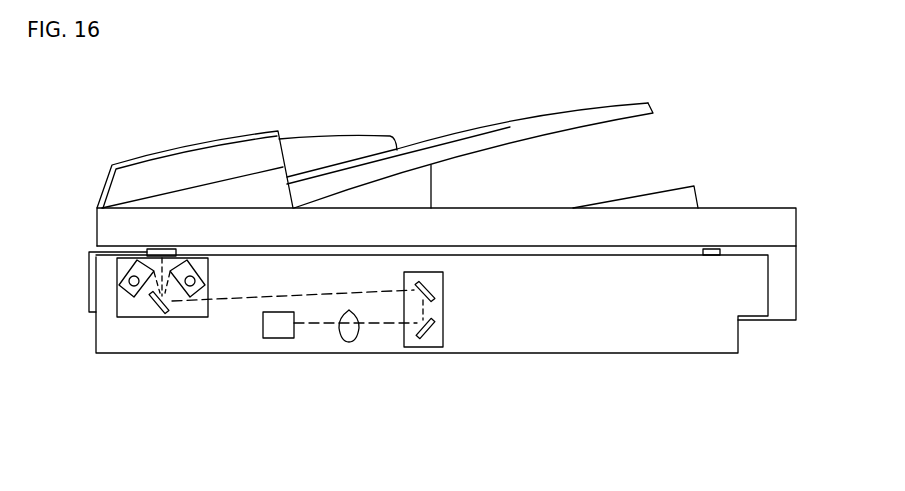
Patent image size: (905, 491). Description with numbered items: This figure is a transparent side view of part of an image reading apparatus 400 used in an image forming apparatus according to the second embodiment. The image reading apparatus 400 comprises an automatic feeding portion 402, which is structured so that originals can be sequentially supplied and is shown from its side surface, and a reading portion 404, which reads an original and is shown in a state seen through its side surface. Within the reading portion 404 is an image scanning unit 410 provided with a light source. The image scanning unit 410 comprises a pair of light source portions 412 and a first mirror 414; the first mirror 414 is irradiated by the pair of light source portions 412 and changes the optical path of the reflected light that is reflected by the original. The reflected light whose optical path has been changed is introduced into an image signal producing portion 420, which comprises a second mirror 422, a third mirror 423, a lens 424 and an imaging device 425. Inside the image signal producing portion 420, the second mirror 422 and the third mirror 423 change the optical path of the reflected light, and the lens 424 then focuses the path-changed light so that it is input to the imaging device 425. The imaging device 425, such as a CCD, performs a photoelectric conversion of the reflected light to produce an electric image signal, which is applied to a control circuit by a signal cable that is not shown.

The image reading apparatus 400 is at (719, 133).
The automatic feeding portion 402 is at (345, 135).
The reading portion 404 is at (786, 282).
The image scanning unit 410 is at (137, 330).
The light source portions 412 is at (117, 277).
The first mirror 414 is at (153, 303).
The image signal producing portion 420 is at (423, 372).
The second mirror 422 is at (432, 288).
The third mirror 423 is at (436, 328).
The lens 424 is at (355, 336).
The imaging device 425 is at (291, 357).